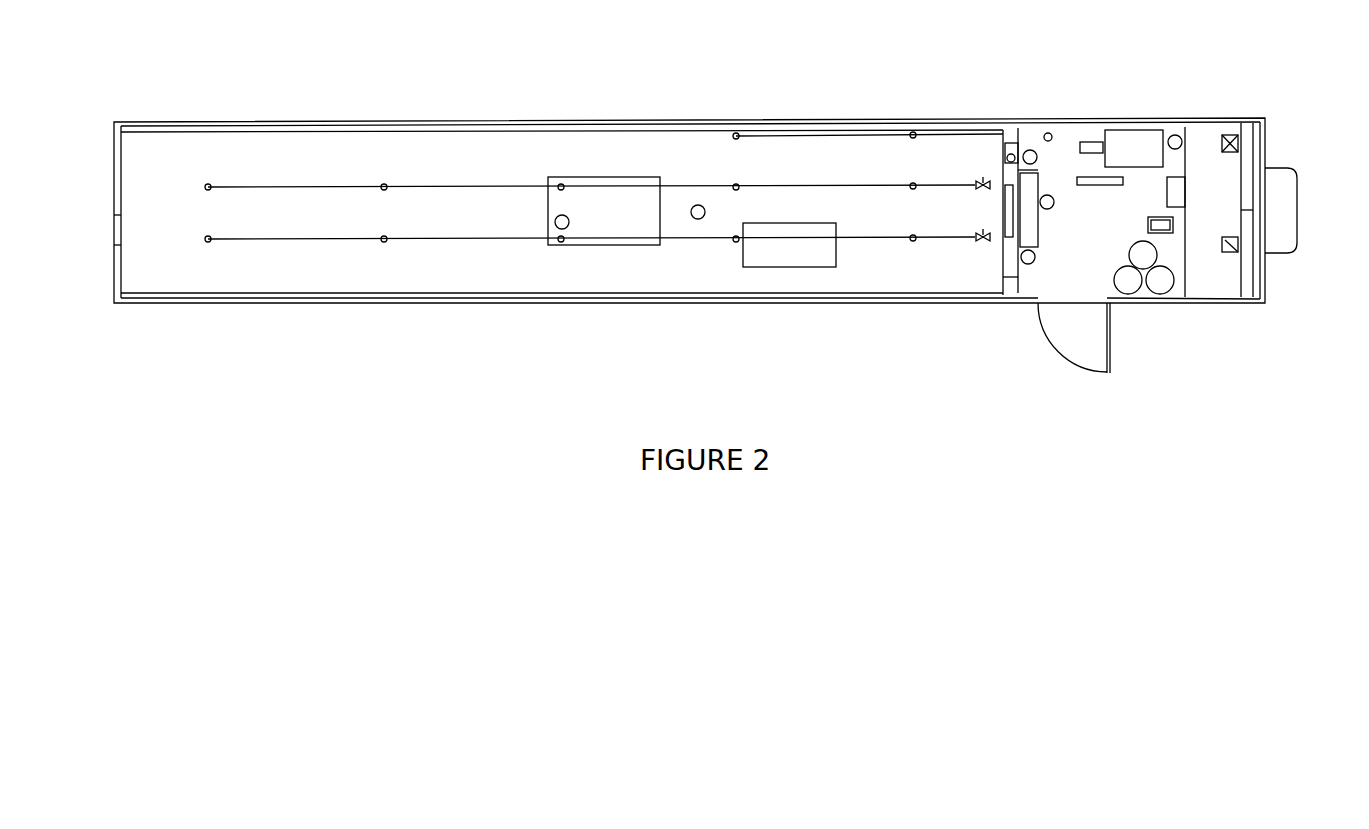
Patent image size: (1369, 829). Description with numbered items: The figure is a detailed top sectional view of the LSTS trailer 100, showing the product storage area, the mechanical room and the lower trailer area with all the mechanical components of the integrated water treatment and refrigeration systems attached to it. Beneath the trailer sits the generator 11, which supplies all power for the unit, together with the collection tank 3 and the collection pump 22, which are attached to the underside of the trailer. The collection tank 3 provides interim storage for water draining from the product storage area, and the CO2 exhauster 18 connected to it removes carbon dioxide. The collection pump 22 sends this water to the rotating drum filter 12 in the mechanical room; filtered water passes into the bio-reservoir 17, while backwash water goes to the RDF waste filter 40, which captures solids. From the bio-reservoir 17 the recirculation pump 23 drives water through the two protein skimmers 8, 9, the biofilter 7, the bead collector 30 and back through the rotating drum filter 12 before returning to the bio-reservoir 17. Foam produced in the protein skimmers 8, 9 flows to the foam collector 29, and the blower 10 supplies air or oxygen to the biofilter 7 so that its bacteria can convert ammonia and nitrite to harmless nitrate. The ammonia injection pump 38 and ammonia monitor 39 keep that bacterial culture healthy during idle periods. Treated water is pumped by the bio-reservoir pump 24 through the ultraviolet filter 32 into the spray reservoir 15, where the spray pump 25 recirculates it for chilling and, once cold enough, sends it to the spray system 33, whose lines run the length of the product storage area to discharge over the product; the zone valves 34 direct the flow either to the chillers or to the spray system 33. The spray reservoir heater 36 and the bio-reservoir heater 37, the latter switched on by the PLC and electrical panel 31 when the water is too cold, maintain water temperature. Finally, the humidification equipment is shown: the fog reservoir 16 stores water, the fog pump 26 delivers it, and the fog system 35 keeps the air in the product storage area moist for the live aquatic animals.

The LSTS trailer 100 is at (1263, 122).
The spray system 33 is at (413, 239).
The fog system 35 is at (767, 135).
The collection tank 3 is at (622, 177).
The collection pump 22 is at (564, 215).
The CO2 exhauster 18 is at (698, 205).
The generator 11 is at (784, 223).
The zone valves 34 is at (975, 184).
The spray reservoir 15 is at (975, 235).
The fog reservoir 16 is at (1008, 232).
The spray reservoir heater 36 is at (1018, 143).
The PLC and electrical panel 31 is at (1030, 192).
The bio-reservoir pump 24 is at (1030, 150).
The bio-reservoir heater 37 is at (1048, 133).
The bio-reservoir 17 is at (1057, 158).
The spray pump 25 is at (1052, 207).
The fog pump 26 is at (1028, 264).
The rotating drum filter 12 is at (1085, 142).
The RDF waste filter 40 is at (1125, 148).
The recirculation pump 23 is at (1175, 135).
The biofilter 7 is at (1203, 137).
The ammonia monitor 39 is at (1238, 143).
The bead collector 30 is at (1178, 188).
The ultraviolet filter 32 is at (1108, 187).
The ammonia injection pump 38 is at (1230, 245).
The foam collector 29 is at (1170, 235).
The blower 10 is at (1148, 255).
The protein skimmer 8 is at (1132, 282).
The protein skimmer 9 is at (1160, 283).